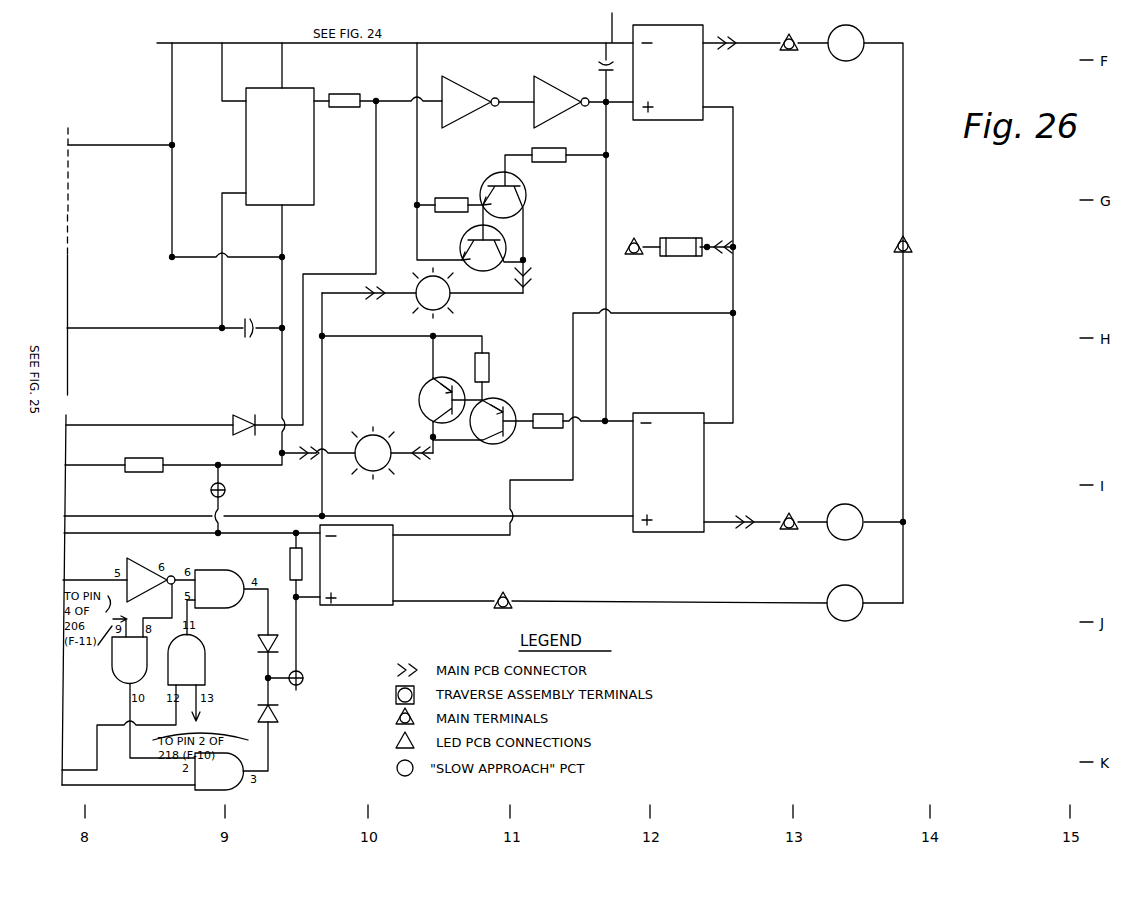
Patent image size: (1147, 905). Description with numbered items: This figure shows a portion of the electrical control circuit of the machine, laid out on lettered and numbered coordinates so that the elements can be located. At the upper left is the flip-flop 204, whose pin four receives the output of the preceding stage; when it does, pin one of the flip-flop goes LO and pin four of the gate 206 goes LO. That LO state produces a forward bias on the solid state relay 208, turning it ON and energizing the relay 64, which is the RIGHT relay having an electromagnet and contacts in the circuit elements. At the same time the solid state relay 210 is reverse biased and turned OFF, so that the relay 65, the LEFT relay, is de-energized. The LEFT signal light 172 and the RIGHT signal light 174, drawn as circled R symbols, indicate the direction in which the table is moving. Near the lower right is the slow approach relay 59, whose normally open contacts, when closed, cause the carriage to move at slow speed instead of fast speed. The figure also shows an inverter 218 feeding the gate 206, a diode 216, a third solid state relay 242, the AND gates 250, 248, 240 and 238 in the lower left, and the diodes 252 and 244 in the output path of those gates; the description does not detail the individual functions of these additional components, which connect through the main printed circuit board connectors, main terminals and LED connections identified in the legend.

The flip-flop 204 is at (246, 158).
The gate 206 is at (535, 122).
The inverter 218 is at (457, 120).
The solid state relay 210 is at (674, 120).
The relay 65 is at (846, 62).
The LEFT signal light 172 is at (408, 308).
The RIGHT signal light 174 is at (367, 435).
The diode 216 is at (244, 415).
The solid state relay 208 is at (698, 432).
The relay 64 is at (828, 512).
The relay 59 is at (876, 584).
The solid state relay 242 is at (395, 574).
The AND gate 250 is at (246, 566).
The AND gate 248 is at (196, 663).
The AND gate 240 is at (123, 682).
The AND gate 238 is at (205, 790).
The diode 252 is at (279, 641).
The diode 244 is at (279, 720).